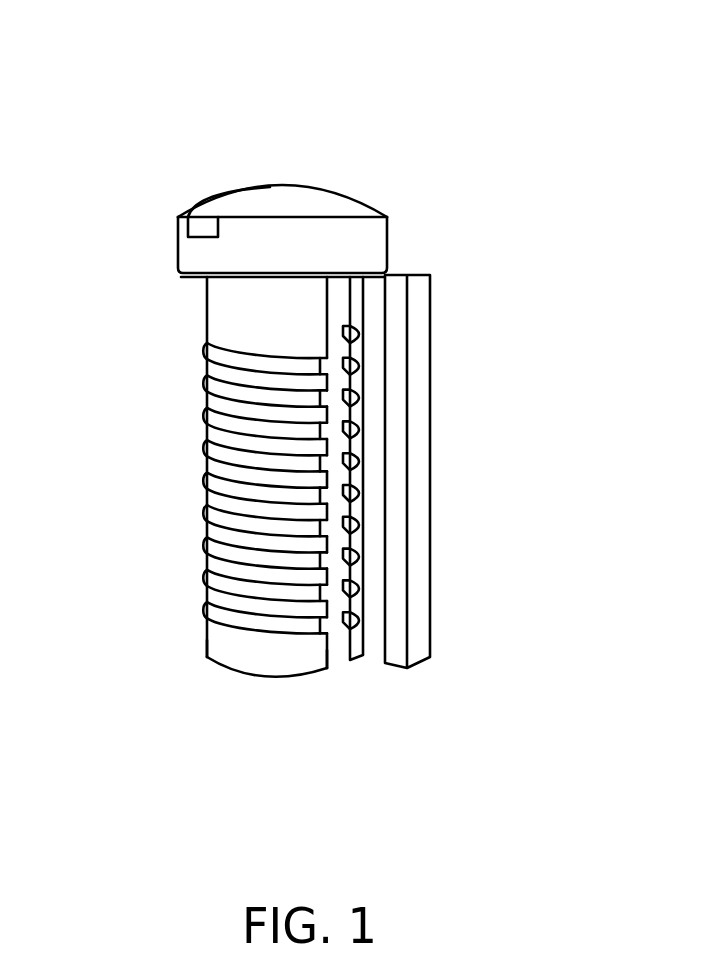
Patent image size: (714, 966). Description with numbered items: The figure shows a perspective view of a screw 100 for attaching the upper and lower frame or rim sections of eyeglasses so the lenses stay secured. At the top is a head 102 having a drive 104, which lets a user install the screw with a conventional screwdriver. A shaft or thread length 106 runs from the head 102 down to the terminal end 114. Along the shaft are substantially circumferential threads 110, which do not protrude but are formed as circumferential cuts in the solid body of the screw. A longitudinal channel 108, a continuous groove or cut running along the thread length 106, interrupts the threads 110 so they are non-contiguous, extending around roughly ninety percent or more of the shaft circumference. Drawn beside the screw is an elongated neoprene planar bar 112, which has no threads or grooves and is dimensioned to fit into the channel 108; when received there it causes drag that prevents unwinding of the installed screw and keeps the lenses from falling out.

The screw 100 is at (277, 168).
The head 102 is at (358, 253).
The drive 104 is at (210, 222).
The thread length 106 is at (163, 275).
The longitudinal channel 108 is at (330, 640).
The threads 110 is at (207, 383).
The planar bar 112 is at (415, 487).
The terminal end 114 is at (307, 673).